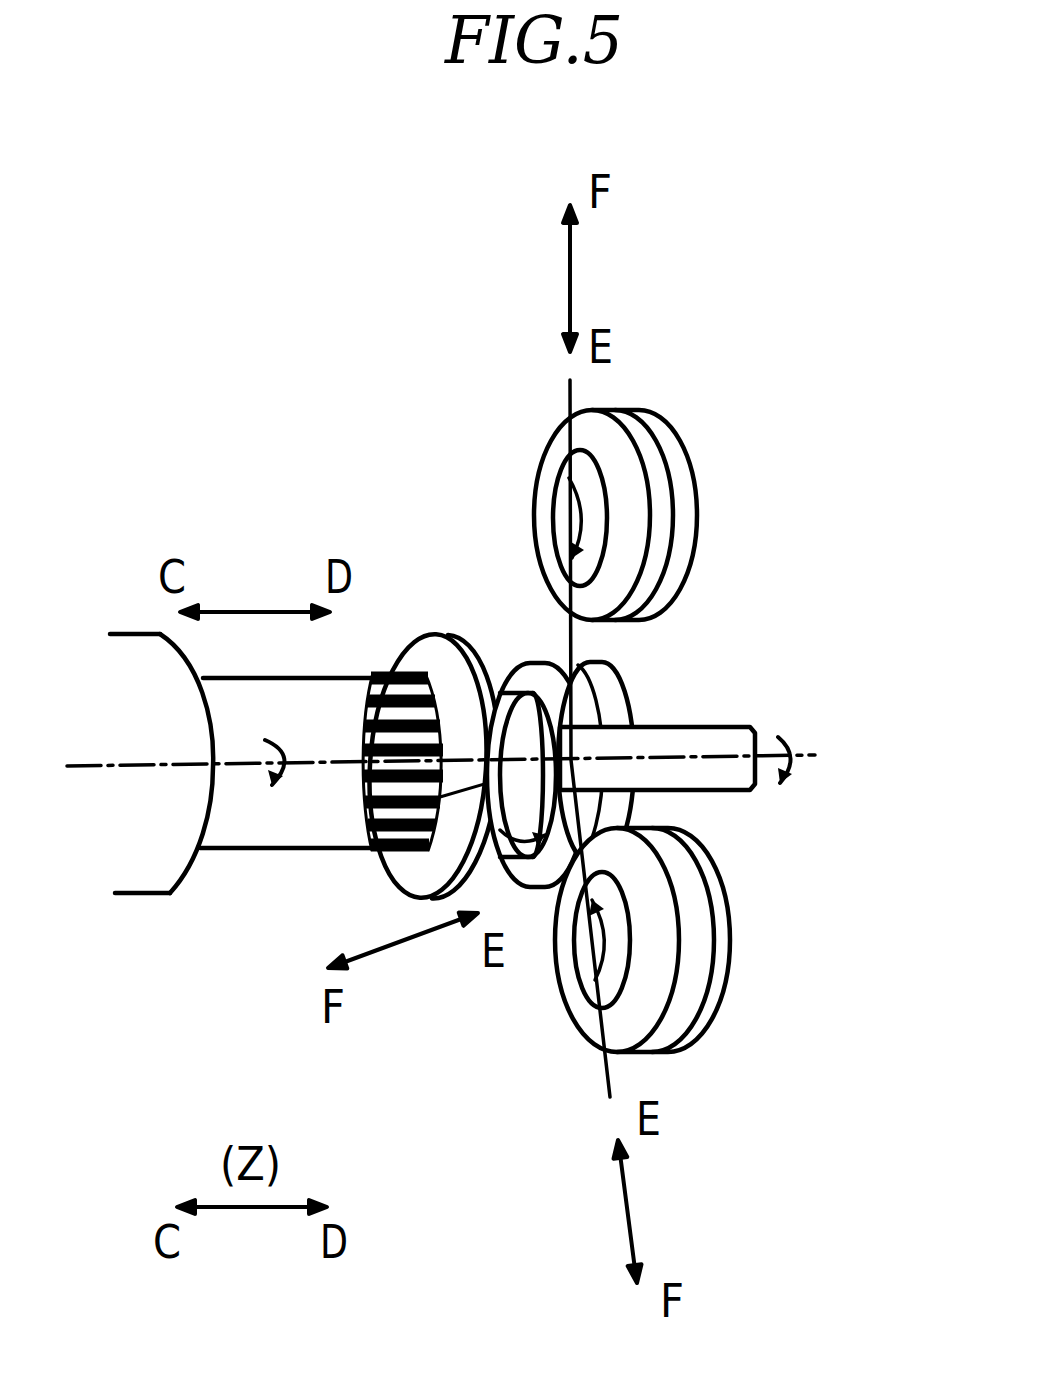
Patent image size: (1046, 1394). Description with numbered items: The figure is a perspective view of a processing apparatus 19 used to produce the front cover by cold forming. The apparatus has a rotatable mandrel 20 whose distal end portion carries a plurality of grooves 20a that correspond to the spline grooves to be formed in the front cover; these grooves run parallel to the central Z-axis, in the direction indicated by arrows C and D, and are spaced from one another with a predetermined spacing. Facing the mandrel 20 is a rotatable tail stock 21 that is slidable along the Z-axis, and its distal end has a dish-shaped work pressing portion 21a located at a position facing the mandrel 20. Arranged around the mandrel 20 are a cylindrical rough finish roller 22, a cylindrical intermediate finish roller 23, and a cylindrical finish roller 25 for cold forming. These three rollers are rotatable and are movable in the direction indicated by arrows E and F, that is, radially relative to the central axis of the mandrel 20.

The processing apparatus 19 is at (885, 358).
The mandrel 20 is at (227, 835).
The grooves 20a is at (397, 680).
The tail stock 21 is at (708, 737).
The work pressing portion 21a is at (522, 690).
The rough finish roller 22 is at (667, 445).
The intermediate finish roller 23 is at (630, 693).
The finish roller 25 is at (707, 1017).